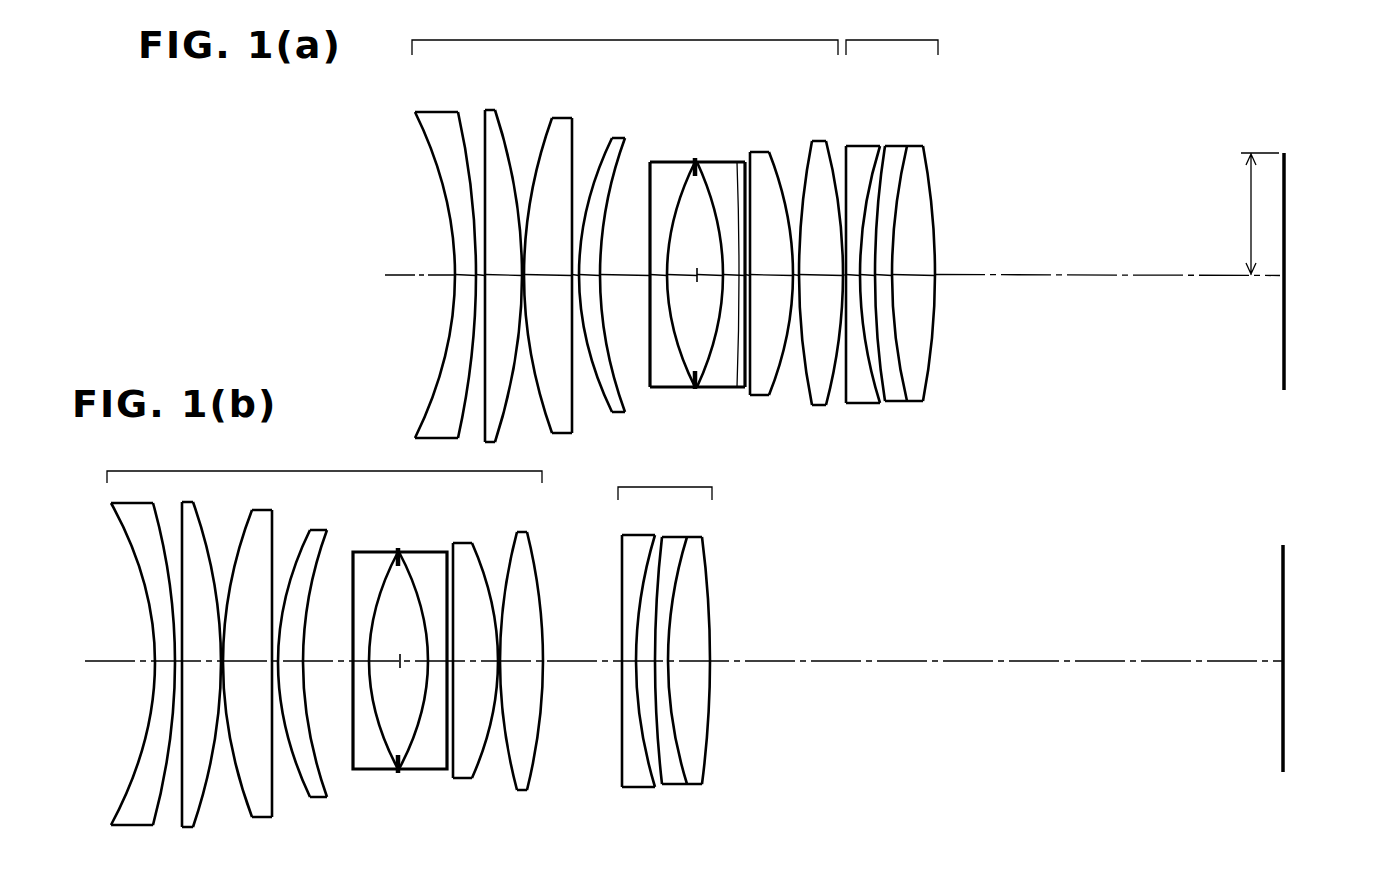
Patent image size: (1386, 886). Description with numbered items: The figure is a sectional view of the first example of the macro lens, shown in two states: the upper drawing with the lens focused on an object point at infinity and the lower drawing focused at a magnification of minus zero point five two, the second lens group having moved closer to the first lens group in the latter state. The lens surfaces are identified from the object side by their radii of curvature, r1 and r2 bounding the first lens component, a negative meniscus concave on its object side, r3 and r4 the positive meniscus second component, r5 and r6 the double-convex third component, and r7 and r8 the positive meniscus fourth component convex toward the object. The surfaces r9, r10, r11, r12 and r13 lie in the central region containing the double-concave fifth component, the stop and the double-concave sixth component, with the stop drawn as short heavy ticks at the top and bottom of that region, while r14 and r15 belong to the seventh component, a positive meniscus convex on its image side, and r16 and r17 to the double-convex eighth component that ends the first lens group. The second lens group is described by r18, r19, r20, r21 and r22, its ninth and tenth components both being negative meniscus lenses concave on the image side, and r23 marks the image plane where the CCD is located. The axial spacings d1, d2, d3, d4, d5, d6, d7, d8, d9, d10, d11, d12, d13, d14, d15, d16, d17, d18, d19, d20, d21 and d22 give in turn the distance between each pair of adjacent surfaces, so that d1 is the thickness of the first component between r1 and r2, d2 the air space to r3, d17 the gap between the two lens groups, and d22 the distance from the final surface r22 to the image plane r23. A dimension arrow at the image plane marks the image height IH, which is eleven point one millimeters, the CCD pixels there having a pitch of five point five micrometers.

The radius of curvature of the first lens surface r1 is at (425, 138).
The radius of curvature of the second lens surface r2 is at (447, 122).
The radius of curvature of the third lens surface r3 is at (480, 128).
The radius of curvature of the fourth lens surface r4 is at (503, 127).
The radius of curvature of the fifth lens surface r5 is at (540, 125).
The radius of curvature of the sixth lens surface r6 is at (573, 122).
The radius of curvature of the seventh lens surface r7 is at (601, 157).
The radius of curvature of the eighth lens surface r8 is at (627, 160).
The radius of curvature of the ninth lens surface r9 is at (652, 163).
The radius of curvature of the tenth lens surface r10 is at (687, 167).
The radius of curvature of the eleventh lens surface r11 is at (703, 170).
The radius of curvature of the twelfth lens surface r12 is at (717, 173).
The radius of curvature of the thirteenth lens surface r13 is at (742, 160).
The radius of curvature of the fourteenth lens surface r14 is at (752, 160).
The radius of curvature of the fifteenth lens surface r15 is at (777, 165).
The radius of curvature of the sixteenth lens surface r16 is at (808, 150).
The radius of curvature of the seventeenth lens surface r17 is at (830, 150).
The radius of curvature of the eighteenth lens surface r18 is at (845, 154).
The radius of curvature of the nineteenth lens surface r19 is at (870, 155).
The radius of curvature of the twentieth lens surface r20 is at (887, 160).
The radius of curvature of the twenty-first lens surface r21 is at (912, 153).
The radius of curvature of the twenty-second lens surface r22 is at (932, 165).
The radius of curvature of the twenty-third surface r23 is at (1285, 170).
The spacing between the first and second lens surfaces d1 is at (463, 283).
The spacing between the second and third lens surfaces d2 is at (474, 290).
The spacing between the third and fourth lens surfaces d3 is at (503, 293).
The spacing between the fourth and fifth lens surfaces d4 is at (523, 300).
The spacing between the fifth and sixth lens surfaces d5 is at (548, 293).
The spacing between the sixth and seventh lens surfaces d6 is at (585, 320).
The spacing between the seventh and eighth lens surfaces d7 is at (612, 413).
The spacing between the eighth and ninth lens surfaces d8 is at (625, 293).
The spacing between the ninth and tenth lens surfaces d9 is at (656, 300).
The spacing between the tenth and eleventh lens surfaces d10 is at (660, 388).
The spacing between the eleventh and twelfth lens surfaces d11 is at (705, 278).
The spacing between the twelfth and thirteenth lens surfaces d12 is at (725, 390).
The spacing between the thirteenth and fourteenth lens surfaces d13 is at (746, 392).
The spacing between the fourteenth and fifteenth lens surfaces d14 is at (771, 293).
The spacing between the fifteenth and sixteenth lens surfaces d15 is at (796, 388).
The spacing between the sixteenth and seventeenth lens surfaces d16 is at (821, 293).
The spacing between the seventeenth and eighteenth lens surfaces d17 is at (844, 402).
The spacing between the eighteenth and nineteenth lens surfaces d18 is at (861, 403).
The spacing between the nineteenth and twentieth lens surfaces d19 is at (870, 402).
The spacing between the twentieth and twenty-first lens surfaces d20 is at (894, 401).
The spacing between the twenty-first and twenty-second lens surfaces d21 is at (915, 296).
The spacing between the twenty-second surface and the image plane d22 is at (1107, 293).
The image height IH is at (1257, 214).